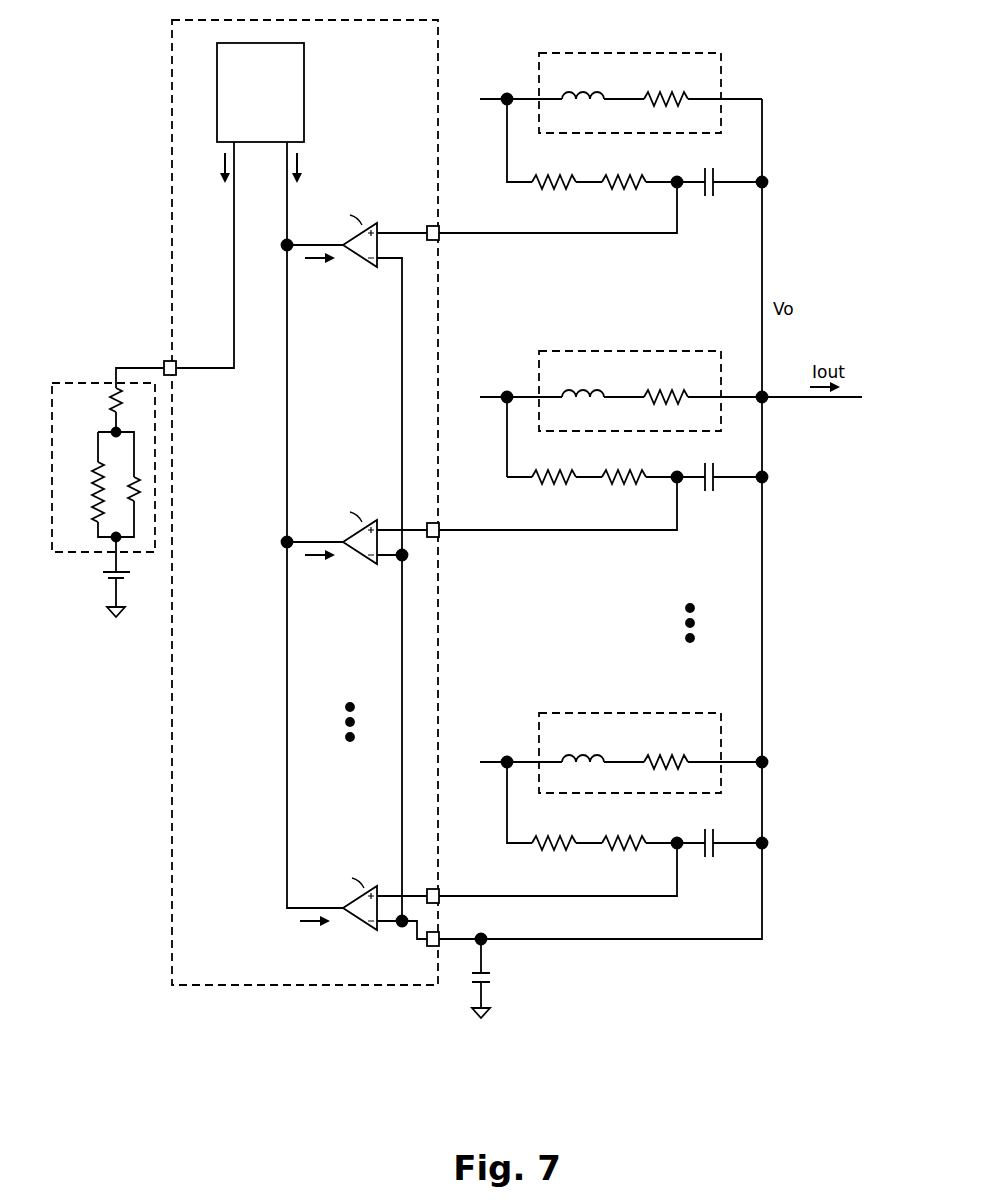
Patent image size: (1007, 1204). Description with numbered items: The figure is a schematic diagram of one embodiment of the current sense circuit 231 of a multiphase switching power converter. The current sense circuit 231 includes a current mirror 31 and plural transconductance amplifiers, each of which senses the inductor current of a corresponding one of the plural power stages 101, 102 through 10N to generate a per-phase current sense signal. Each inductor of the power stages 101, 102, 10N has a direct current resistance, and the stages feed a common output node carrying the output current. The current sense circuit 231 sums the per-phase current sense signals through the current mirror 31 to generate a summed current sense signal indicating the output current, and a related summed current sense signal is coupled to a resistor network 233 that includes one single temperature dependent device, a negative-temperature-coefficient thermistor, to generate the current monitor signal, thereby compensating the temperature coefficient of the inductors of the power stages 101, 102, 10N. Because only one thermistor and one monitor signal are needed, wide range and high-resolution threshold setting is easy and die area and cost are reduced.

The current sense circuit 231 is at (276, 502).
The current mirror 31 is at (260, 92).
The resistor network 233 is at (77, 382).
The power stage 101 is at (683, 52).
The power stage 102 is at (683, 350).
The power stage 10N is at (683, 712).